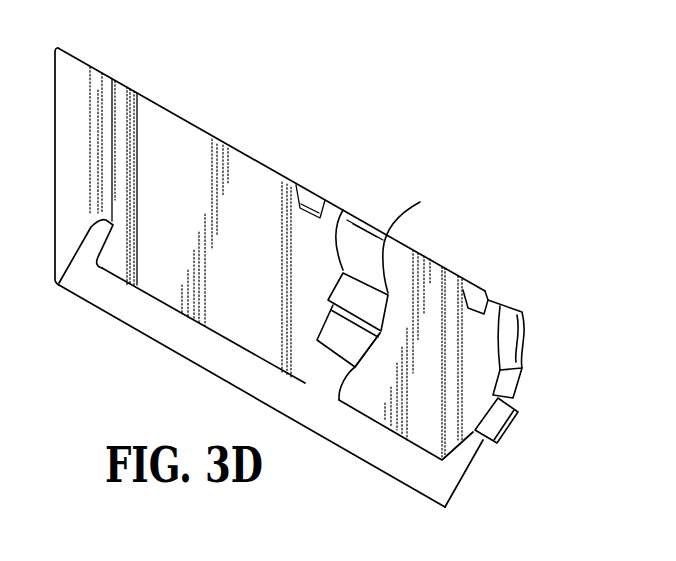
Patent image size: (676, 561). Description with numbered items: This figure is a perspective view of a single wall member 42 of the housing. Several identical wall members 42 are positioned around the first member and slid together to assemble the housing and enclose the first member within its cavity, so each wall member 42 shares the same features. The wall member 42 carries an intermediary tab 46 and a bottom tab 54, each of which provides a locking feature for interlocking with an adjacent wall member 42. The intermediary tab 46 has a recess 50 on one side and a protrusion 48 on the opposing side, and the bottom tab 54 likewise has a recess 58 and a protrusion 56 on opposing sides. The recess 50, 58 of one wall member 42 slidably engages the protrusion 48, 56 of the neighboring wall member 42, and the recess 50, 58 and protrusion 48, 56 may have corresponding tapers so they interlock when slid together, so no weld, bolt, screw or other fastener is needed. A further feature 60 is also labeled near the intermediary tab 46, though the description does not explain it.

The wall member 42 is at (408, 145).
The intermediary tab 46 is at (312, 250).
The protrusion 48 is at (343, 338).
The recess 50 is at (316, 202).
The bottom tab 54 is at (485, 340).
The protrusion 56 is at (503, 423).
The recess 58 is at (486, 289).
The curved portion 60 is at (359, 255).